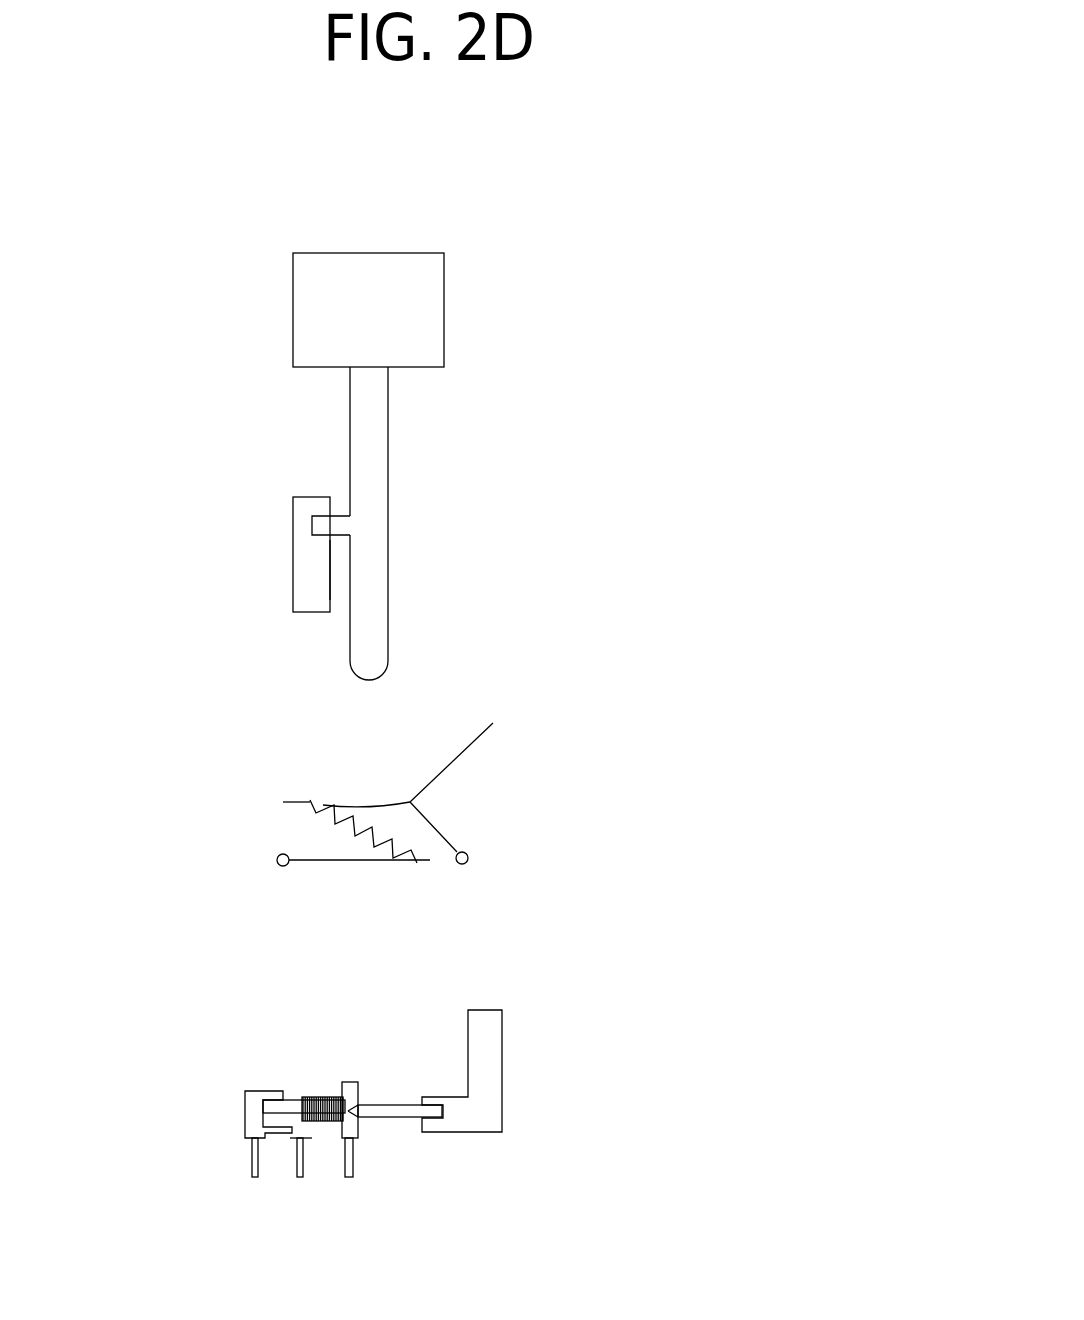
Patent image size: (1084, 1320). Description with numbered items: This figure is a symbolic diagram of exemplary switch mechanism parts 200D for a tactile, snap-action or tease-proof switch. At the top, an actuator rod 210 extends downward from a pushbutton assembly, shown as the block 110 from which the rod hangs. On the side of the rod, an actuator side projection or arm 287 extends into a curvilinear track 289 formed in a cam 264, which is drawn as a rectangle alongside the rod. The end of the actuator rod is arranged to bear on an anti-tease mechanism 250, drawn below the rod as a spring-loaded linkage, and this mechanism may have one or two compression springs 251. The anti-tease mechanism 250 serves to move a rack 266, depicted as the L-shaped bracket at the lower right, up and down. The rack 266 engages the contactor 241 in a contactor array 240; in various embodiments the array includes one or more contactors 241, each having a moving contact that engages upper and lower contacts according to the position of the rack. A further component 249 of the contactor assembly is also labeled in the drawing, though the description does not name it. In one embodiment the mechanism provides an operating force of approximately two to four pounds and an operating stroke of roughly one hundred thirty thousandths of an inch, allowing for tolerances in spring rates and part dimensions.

The switch mechanism parts 200D is at (733, 147).
The handle / knob body 110 is at (456, 309).
The actuator rod 210 is at (404, 453).
The actuator side projection or arm 287 is at (347, 515).
The cam 264 is at (293, 592).
The curvilinear track 289 is at (327, 538).
The anti-tease mechanism 250 is at (437, 784).
The compression spring 251 is at (493, 723).
The contactor 241 is at (295, 1098).
The coil 249 is at (325, 1123).
The contactor array 240 is at (364, 1060).
The rack 266 is at (503, 1030).